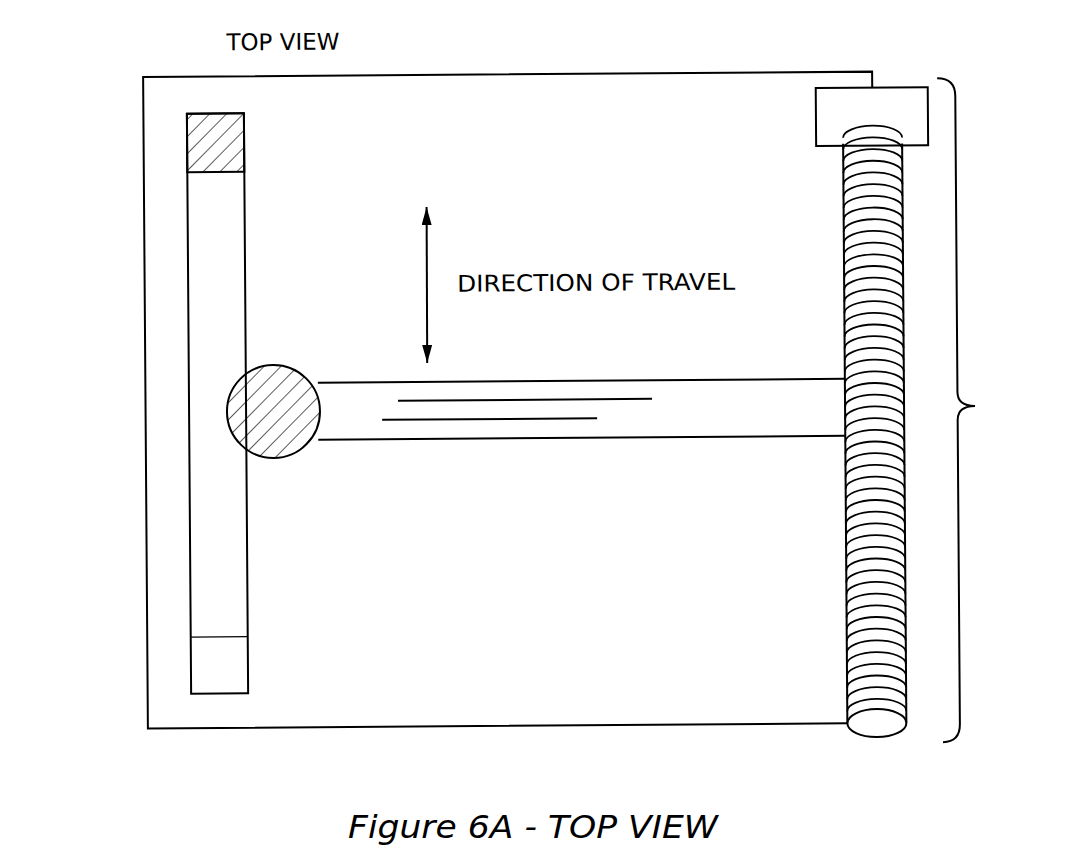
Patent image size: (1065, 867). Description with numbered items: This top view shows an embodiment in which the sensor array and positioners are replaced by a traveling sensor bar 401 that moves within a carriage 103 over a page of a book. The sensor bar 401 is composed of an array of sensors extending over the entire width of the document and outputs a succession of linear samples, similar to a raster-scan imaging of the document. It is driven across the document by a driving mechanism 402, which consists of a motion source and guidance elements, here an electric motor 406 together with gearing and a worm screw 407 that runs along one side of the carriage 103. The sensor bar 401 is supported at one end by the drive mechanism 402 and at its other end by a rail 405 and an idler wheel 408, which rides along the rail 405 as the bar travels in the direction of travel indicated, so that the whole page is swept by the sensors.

The carriage 103 is at (394, 72).
The sensor bar 401 is at (755, 428).
The driving mechanism 402 is at (865, 388).
The rail 405 is at (218, 570).
The electric motor 406 is at (902, 102).
The worm screw 407 is at (846, 617).
The idler wheel 408 is at (282, 456).